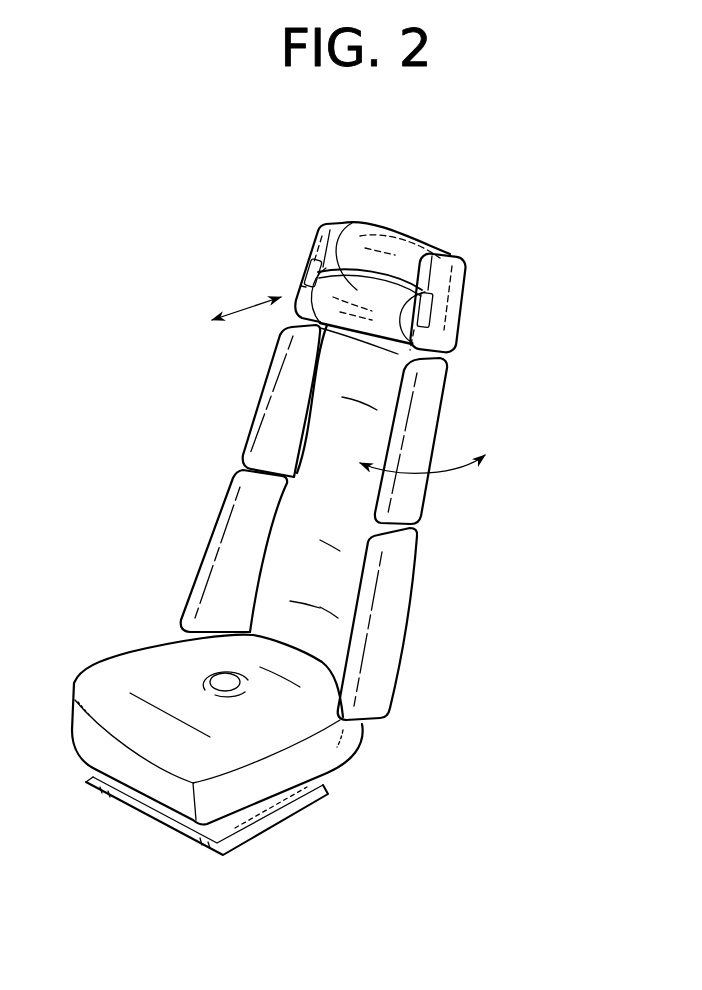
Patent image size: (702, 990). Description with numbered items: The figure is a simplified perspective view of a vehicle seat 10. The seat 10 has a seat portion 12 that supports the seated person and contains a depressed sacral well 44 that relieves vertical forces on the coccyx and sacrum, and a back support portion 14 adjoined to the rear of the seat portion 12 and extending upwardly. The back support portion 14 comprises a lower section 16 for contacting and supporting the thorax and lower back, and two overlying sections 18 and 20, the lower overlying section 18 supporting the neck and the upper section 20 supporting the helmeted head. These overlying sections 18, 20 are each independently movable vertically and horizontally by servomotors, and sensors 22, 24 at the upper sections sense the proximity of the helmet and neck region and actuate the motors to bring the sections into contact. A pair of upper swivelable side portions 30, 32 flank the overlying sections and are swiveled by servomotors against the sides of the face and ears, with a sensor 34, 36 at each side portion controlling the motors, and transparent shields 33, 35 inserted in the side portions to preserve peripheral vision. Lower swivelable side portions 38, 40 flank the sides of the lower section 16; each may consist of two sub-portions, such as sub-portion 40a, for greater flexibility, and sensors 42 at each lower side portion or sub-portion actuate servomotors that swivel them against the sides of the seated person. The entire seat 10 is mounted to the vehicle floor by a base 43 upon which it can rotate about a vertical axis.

The vehicle seat 10 is at (311, 230).
The seat portion 12 is at (380, 742).
The back support portion 14 is at (325, 526).
The lower section 16 is at (367, 430).
The overlying section 18 is at (380, 306).
The overlying section 20 is at (399, 234).
The sensor 22 is at (357, 291).
The sensor 24 is at (381, 250).
The upper swivelable side portion 30 is at (295, 267).
The upper swivelable side portion 32 is at (460, 327).
The transparent shield 33 is at (307, 277).
The sensor 34 is at (320, 252).
The transparent shield 35 is at (443, 303).
The sensor 36 is at (457, 271).
The lower swivelable side portion 38 is at (235, 427).
The lower swivelable side portion 40 is at (435, 533).
The sub-portion 40a is at (443, 393).
The sensor 42 is at (288, 400).
The base 43 is at (300, 817).
The depressed sacral well 44 is at (200, 682).